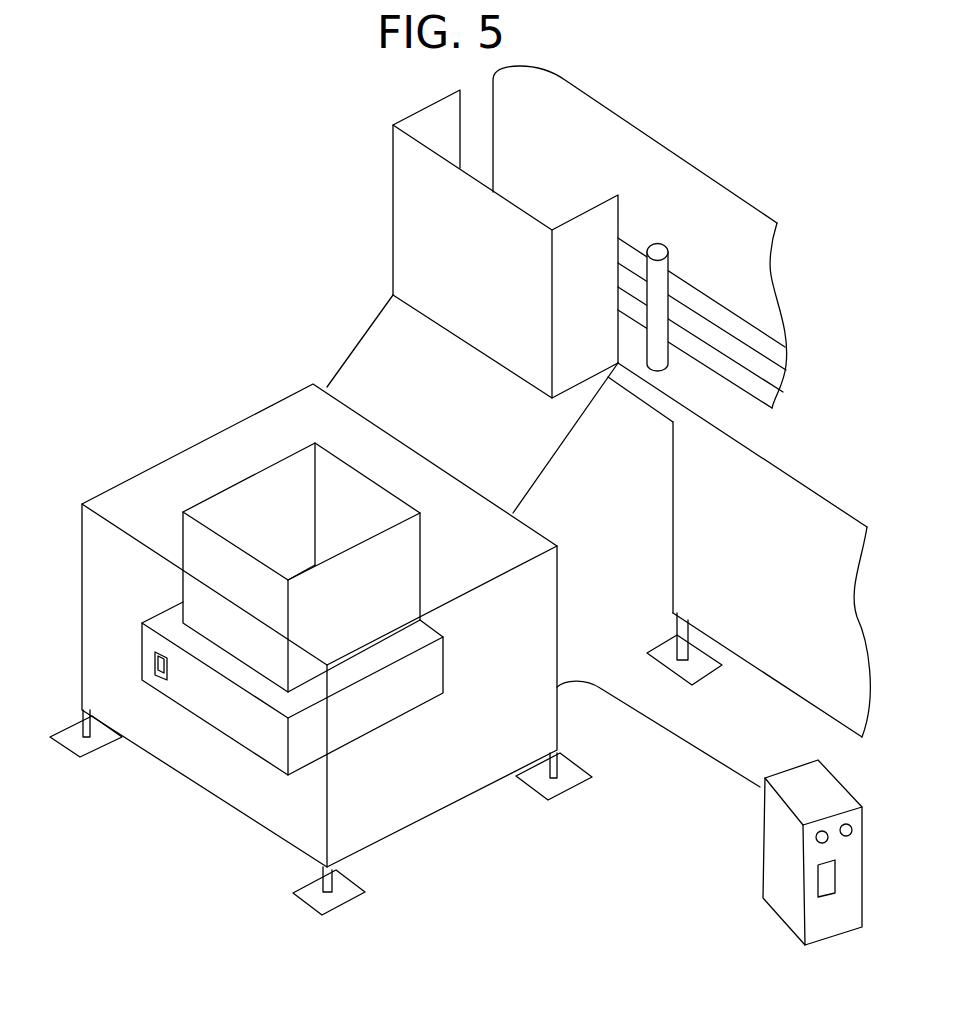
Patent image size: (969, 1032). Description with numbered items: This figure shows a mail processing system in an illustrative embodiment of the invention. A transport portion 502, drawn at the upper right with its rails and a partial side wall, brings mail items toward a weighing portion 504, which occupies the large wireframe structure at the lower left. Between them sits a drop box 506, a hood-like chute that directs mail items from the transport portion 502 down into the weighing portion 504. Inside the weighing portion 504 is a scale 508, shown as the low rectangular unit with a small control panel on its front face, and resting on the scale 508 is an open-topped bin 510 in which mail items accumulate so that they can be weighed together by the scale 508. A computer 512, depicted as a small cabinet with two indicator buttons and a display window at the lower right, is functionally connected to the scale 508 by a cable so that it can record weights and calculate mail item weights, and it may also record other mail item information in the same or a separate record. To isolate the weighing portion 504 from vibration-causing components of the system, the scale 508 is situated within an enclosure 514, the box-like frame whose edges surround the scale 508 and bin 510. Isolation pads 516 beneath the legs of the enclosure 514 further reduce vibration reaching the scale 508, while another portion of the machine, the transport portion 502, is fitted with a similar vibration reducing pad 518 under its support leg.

The transport portion 502 is at (687, 178).
The weighing portion 504 is at (321, 606).
The drop box 506 is at (488, 235).
The scale 508 is at (190, 713).
The bin 510 is at (380, 498).
The computer 512 is at (822, 778).
The enclosure 514 is at (240, 817).
The isolation pads 516 is at (572, 787).
The vibration reducing pad 518 is at (705, 678).